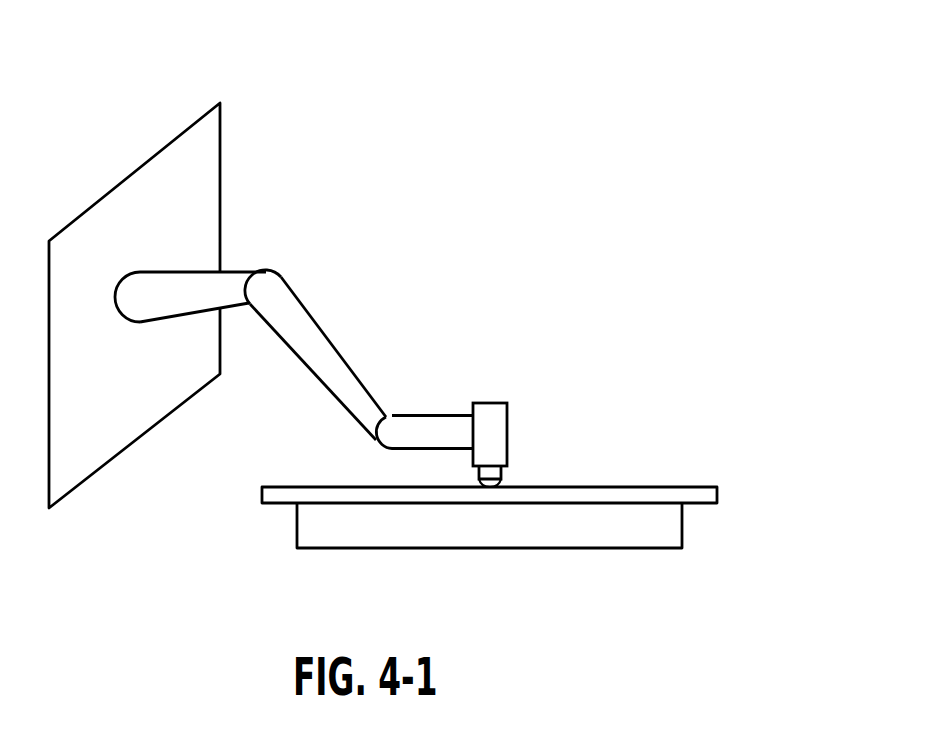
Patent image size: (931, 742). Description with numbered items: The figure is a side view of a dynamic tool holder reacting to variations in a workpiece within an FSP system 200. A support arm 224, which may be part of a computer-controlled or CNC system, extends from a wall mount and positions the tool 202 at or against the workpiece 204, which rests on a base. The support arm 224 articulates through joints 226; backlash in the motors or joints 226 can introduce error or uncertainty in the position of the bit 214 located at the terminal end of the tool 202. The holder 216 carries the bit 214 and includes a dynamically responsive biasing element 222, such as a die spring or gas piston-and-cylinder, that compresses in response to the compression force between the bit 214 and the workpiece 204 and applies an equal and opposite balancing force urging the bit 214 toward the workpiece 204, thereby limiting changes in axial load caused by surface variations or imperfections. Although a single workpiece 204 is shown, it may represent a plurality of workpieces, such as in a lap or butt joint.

The FSP system 200 is at (733, 118).
The tool 202 is at (531, 377).
The workpiece 204 is at (717, 495).
The bit 214 is at (484, 484).
The holder 216 is at (507, 432).
The biasing element 222 is at (501, 474).
The support arm 224 is at (360, 288).
The joint 226 is at (270, 272).